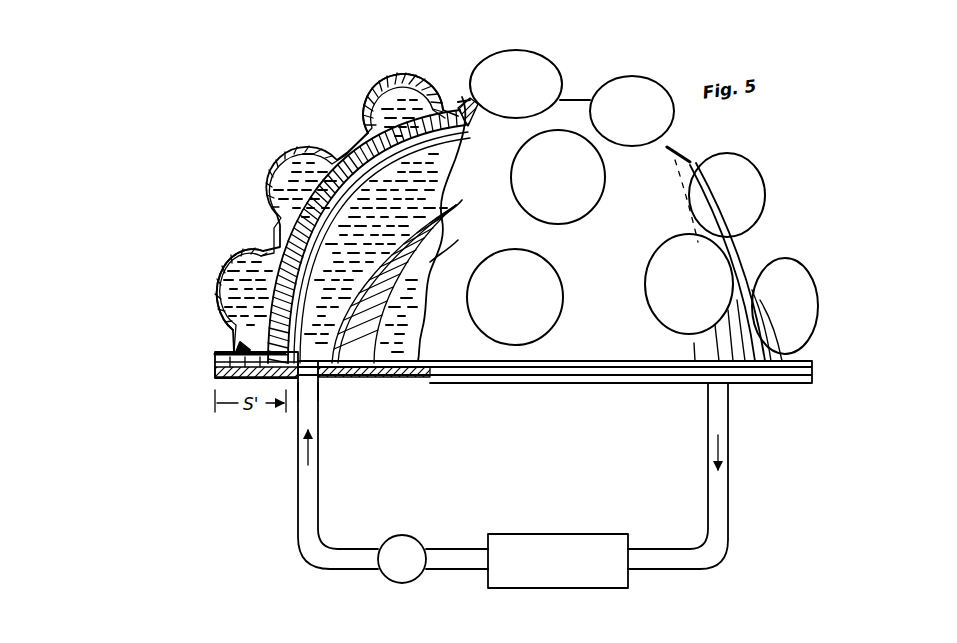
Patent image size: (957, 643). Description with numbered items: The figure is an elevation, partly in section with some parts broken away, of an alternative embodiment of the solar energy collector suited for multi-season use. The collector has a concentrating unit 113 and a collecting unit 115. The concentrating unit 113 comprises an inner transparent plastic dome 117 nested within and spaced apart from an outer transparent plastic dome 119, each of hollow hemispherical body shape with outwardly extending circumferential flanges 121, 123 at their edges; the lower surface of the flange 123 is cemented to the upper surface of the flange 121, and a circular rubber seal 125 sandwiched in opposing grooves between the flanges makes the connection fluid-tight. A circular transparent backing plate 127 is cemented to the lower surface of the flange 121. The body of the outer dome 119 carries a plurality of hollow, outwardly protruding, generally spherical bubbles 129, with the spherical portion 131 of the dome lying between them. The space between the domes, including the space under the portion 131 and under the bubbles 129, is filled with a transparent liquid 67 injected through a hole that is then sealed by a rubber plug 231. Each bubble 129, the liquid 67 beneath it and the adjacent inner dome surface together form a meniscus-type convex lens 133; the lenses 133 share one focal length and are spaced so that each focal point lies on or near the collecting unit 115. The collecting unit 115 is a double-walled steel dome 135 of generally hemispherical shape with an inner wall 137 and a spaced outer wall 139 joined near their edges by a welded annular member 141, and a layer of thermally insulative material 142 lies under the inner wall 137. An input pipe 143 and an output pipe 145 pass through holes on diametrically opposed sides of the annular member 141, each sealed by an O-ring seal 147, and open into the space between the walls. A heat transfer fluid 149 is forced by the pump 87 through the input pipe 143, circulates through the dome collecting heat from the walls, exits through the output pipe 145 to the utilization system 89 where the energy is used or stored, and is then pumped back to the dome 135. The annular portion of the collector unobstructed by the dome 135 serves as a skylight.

The transparent liquid 67 is at (248, 275).
The pump 87 is at (410, 536).
The utilization system 89 is at (555, 534).
The concentrating unit 113 is at (406, 72).
The collecting unit 115 is at (457, 106).
The inner transparent plastic dome 117 is at (305, 200).
The outer transparent plastic dome 119 is at (658, 211).
The circumferential flange of inner dome 121 is at (220, 371).
The circumferential flange of outer dome 123 is at (225, 358).
The circular seal 125 is at (232, 352).
The backing plate 127 is at (382, 385).
The bubbles 129 is at (308, 148).
The spherical portion of outer dome 131 is at (347, 150).
The meniscus-type convex lenses 133 is at (616, 73).
The double-walled dome 135 is at (413, 145).
The inner wall 137 is at (343, 280).
The outer wall 139 is at (348, 297).
The annular member 141 is at (350, 345).
The thermally insulative material 142 is at (450, 222).
The input pipe 143 is at (318, 488).
The output pipe 145 is at (728, 508).
The O-ring seal 147 is at (306, 372).
The heat transfer fluid 149 is at (432, 262).
The plug 231 is at (240, 343).